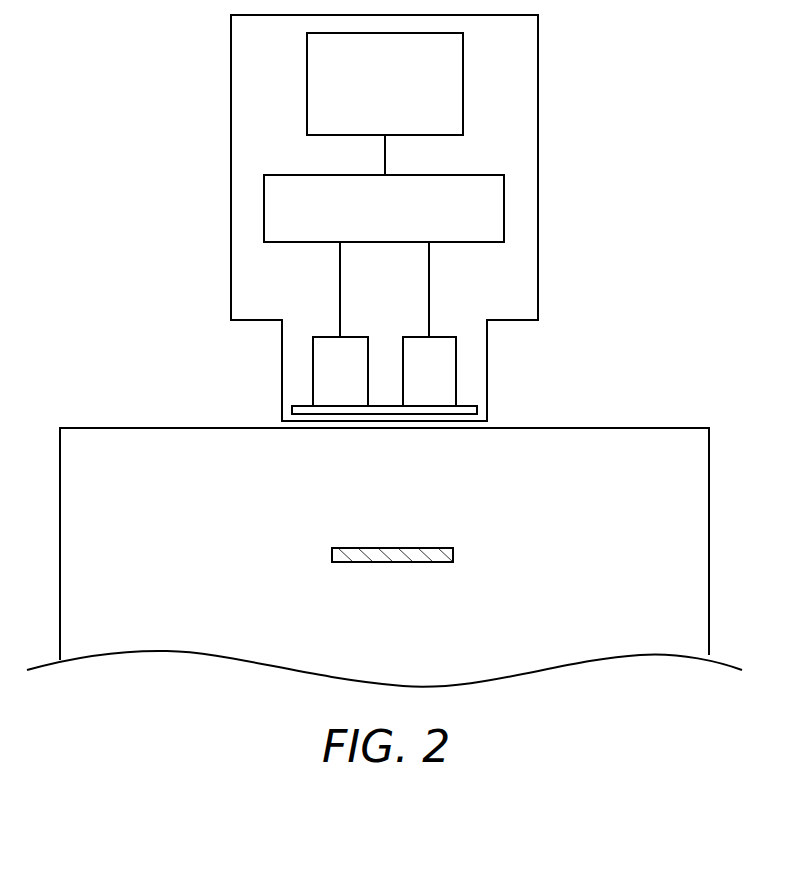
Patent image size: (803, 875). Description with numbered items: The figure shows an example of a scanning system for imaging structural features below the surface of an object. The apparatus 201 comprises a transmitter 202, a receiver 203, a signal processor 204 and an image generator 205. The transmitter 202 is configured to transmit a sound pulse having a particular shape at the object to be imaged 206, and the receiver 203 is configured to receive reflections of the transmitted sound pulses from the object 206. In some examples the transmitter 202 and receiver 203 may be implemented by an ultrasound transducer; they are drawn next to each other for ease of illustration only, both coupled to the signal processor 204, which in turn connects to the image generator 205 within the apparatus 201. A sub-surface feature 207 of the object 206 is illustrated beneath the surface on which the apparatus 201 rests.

The apparatus 201 is at (229, 16).
The transmitter 202 is at (456, 350).
The receiver 203 is at (313, 349).
The signal processor 204 is at (504, 187).
The image generator 205 is at (463, 50).
The object to be imaged 206 is at (676, 427).
The sub-surface feature 207 is at (453, 555).